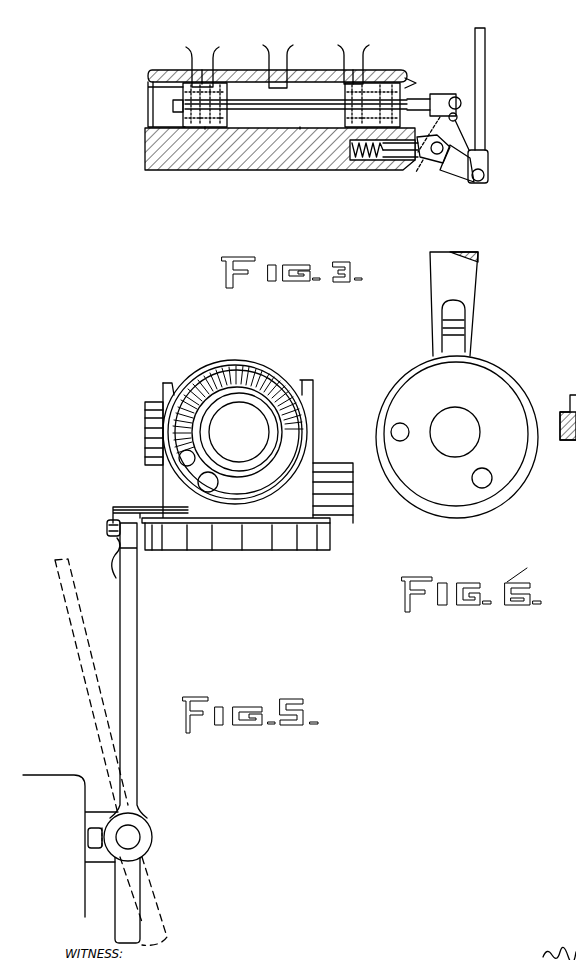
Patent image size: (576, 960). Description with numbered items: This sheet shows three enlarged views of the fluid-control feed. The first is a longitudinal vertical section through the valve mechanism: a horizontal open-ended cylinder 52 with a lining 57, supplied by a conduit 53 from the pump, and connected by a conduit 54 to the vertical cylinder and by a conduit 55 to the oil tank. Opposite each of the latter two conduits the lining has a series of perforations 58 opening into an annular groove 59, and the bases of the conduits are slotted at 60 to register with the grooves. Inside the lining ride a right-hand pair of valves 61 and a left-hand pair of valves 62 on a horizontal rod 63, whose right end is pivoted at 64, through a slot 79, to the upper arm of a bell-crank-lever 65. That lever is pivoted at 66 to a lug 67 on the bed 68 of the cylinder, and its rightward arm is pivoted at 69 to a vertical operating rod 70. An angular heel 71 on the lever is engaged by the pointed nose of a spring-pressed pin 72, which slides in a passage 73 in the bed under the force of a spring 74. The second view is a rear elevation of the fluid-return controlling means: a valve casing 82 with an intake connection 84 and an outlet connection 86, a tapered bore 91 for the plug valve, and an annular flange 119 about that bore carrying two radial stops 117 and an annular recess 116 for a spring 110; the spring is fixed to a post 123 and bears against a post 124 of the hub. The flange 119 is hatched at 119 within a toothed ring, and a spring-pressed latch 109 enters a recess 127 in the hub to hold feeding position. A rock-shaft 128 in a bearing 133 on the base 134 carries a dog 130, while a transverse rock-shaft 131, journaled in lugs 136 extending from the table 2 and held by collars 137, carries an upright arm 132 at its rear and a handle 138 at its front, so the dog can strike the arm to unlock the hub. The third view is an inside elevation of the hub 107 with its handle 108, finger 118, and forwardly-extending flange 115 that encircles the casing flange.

In FIG. 5, the table 2 is at (50, 770).
In FIG. 3, the horizontal open-ended cylinder 52 is at (300, 70).
In FIG. 3, the conduit 53 is at (280, 58).
In FIG. 3, the conduit 54 is at (363, 60).
In FIG. 3, the conduit 55 is at (192, 62).
In FIG. 3, the lining 57 is at (296, 92).
In FIG. 3, the perforations 58 is at (360, 75).
In FIG. 3, the annular groove 59 is at (203, 130).
In FIG. 3, the slot 60 is at (213, 68).
In FIG. 3, the right-hand pair of valves 61 is at (414, 84).
In FIG. 3, the left-hand pair of valves 62 is at (183, 92).
In FIG. 3, the stem or rod 63 is at (326, 102).
In FIG. 3, the pivotal connection 64 is at (458, 97).
In FIG. 3, the bell-crank-lever 65 is at (462, 172).
In FIG. 3, the pivot 66 is at (436, 156).
In FIG. 3, the lug 67 is at (418, 165).
In FIG. 3, the bed 68 is at (145, 152).
In FIG. 3, the pivot 69 is at (486, 175).
In FIG. 3, the operating rod 70 is at (486, 94).
In FIG. 3, the angular heel 71 is at (380, 160).
In FIG. 3, the spring-pressed pin 72 is at (385, 162).
In FIG. 3, the passage 73 is at (340, 160).
In FIG. 3, the spring 74 is at (368, 160).
In FIG. 3, the slot 79 is at (460, 114).
In FIG. 5, the valve casing 82 is at (268, 540).
In FIG. 5, the intake connection 84 is at (145, 438).
In FIG. 5, the outlet connection 86 is at (350, 500).
In FIG. 5, the tapered bore 91 is at (214, 432).
In FIG. 6, the hub 107 is at (450, 444).
In FIG. 6, the handle 108 is at (470, 270).
In FIG. 5, the latch 109 is at (207, 492).
In FIG. 5, the spring 110 is at (262, 370).
In FIG. 6, the flange 115 is at (510, 380).
In FIG. 5, the annular recess 116 is at (250, 487).
In FIG. 5, the stops 117 is at (168, 388).
In FIG. 6, the finger or lug 118 is at (465, 328).
In FIG. 5, the annular flange 119 is at (204, 368).
In FIG. 5, the post 123 is at (180, 462).
In FIG. 6, the post 124 is at (392, 428).
In FIG. 6, the recess 127 is at (490, 480).
In FIG. 5, the rock-shaft 128 is at (107, 528).
In FIG. 5, the dog 130 is at (116, 572).
In FIG. 5, the rock-shaft 131 is at (132, 835).
In FIG. 5, the arm 132 is at (130, 681).
In FIG. 5, the bearing 133 is at (140, 507).
In FIG. 5, the base 134 is at (280, 550).
In FIG. 5, the lugs 136 is at (90, 853).
In FIG. 5, the collars 137 is at (110, 847).
In FIG. 5, the handle 138 is at (132, 927).